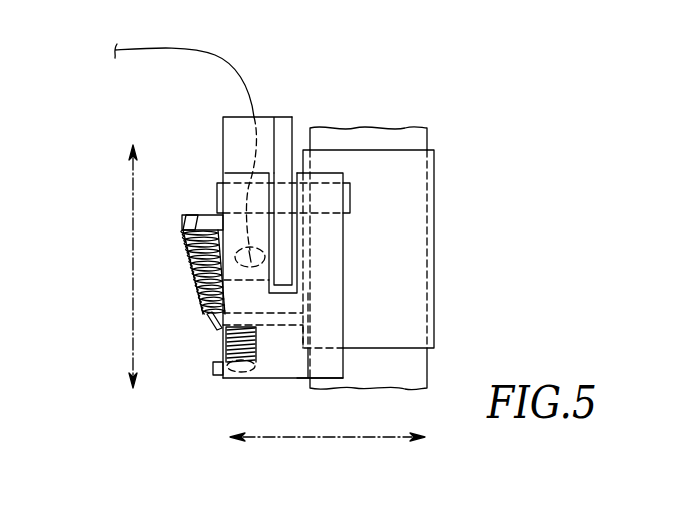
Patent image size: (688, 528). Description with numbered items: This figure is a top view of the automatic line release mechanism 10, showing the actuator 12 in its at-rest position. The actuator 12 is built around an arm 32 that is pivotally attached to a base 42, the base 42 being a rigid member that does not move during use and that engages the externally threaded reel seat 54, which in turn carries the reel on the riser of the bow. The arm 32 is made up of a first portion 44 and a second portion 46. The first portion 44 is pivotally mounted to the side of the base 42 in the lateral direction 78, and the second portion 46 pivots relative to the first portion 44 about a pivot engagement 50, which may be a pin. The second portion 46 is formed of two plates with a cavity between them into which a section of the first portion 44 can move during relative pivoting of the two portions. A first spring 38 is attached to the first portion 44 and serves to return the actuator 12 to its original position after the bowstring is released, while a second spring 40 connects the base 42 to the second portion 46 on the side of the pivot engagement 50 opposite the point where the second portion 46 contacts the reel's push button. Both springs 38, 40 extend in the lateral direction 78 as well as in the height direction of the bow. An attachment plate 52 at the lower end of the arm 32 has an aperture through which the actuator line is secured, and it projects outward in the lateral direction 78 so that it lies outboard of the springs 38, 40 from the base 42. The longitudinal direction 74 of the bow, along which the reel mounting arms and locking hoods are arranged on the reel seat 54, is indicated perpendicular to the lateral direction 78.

The automatic line release mechanism 10 is at (480, 112).
The actuator 12 is at (228, 117).
The arm 32 is at (283, 117).
The first spring 38 is at (222, 347).
The second spring 40 is at (187, 268).
The base 42 is at (407, 215).
The first portion 44 is at (285, 243).
The second portion 46 is at (327, 318).
The pivot engagement 50 is at (350, 195).
The attachment plate 52 is at (282, 367).
The reel seat 54 is at (380, 128).
The longitudinal direction 74 is at (133, 280).
The lateral direction 78 is at (322, 440).